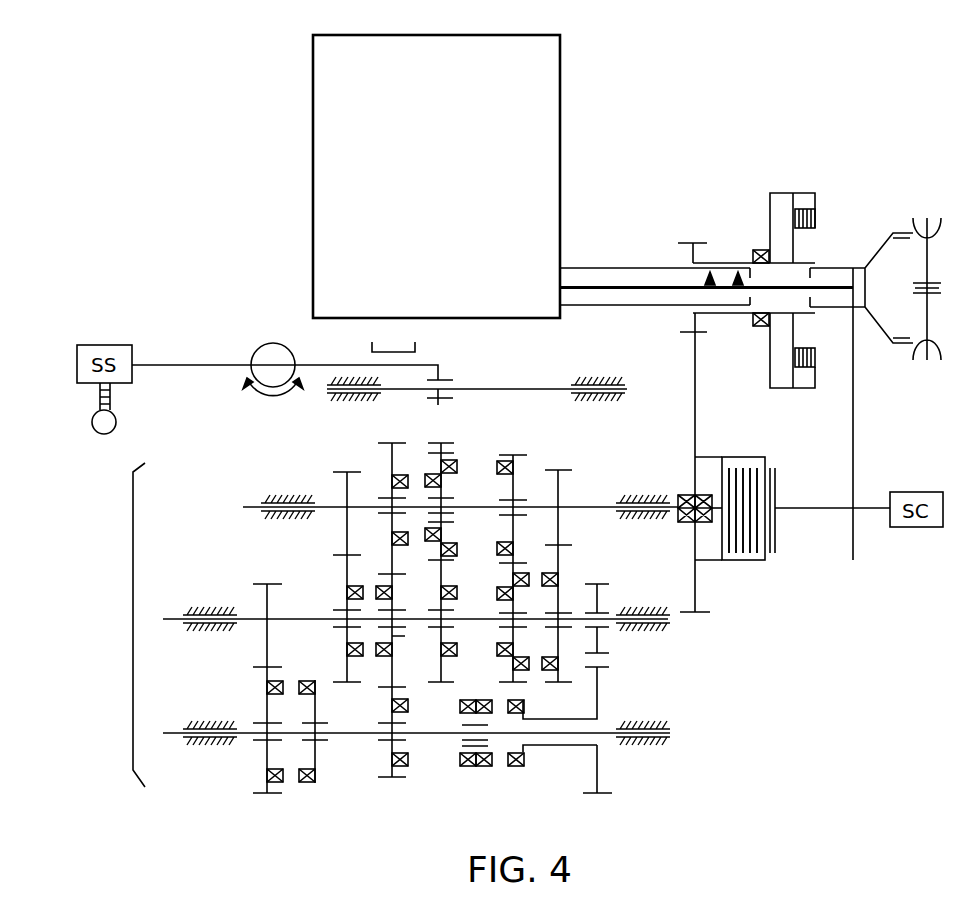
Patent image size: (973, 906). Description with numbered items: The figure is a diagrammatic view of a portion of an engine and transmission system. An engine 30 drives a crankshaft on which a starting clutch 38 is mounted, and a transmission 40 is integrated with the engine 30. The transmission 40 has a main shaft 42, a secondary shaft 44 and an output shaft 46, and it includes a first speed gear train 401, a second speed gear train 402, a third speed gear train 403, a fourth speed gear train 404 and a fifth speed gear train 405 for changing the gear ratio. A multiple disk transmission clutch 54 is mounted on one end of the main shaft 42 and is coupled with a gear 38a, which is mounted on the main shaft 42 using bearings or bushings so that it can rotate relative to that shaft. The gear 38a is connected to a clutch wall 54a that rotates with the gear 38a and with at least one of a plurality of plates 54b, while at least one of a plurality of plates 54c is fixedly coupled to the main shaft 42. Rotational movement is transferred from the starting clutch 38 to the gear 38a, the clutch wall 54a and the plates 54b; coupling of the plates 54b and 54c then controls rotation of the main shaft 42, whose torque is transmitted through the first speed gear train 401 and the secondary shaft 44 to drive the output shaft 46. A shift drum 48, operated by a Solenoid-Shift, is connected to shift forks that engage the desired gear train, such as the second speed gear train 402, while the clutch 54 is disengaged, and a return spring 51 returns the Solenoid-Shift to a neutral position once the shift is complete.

The engine 30 is at (531, 36).
The starting clutch 38 is at (795, 192).
The gear 38a is at (697, 387).
The transmission 40 is at (133, 642).
The first speed gear train 401 is at (556, 562).
The second speed gear train 402 is at (347, 564).
The third speed gear train 403 is at (439, 548).
The fourth speed gear train 404 is at (510, 555).
The fifth speed gear train 405 is at (390, 597).
The main shaft 42 is at (583, 505).
The secondary shaft 44 is at (613, 618).
The output shaft 46 is at (606, 731).
The shift drum 48 is at (268, 352).
The return spring 51 is at (116, 421).
The multiple disk transmission clutch 54 is at (440, 403).
The clutch wall 54a is at (710, 457).
The plates 54b is at (729, 457).
The plates 54c is at (729, 553).